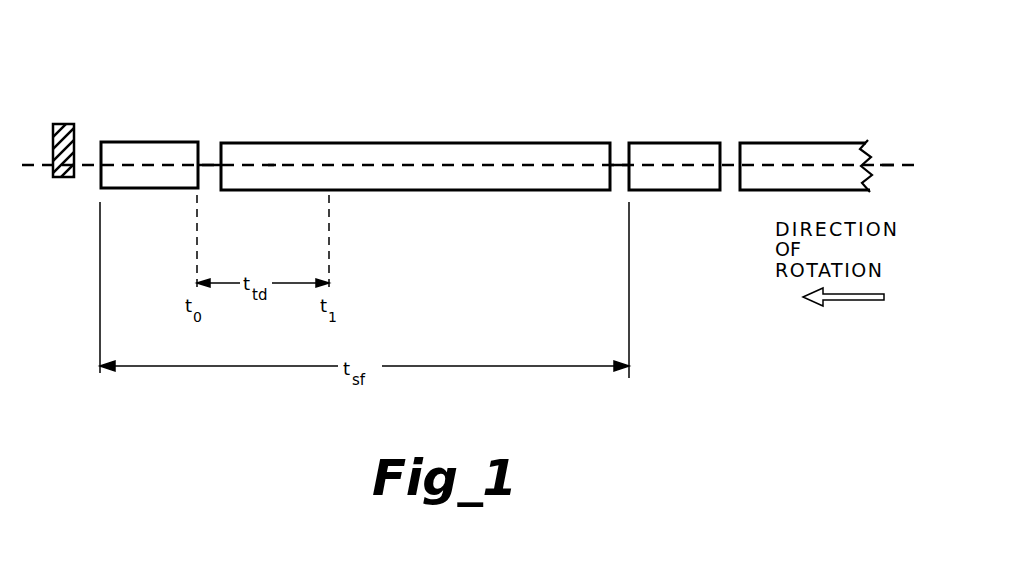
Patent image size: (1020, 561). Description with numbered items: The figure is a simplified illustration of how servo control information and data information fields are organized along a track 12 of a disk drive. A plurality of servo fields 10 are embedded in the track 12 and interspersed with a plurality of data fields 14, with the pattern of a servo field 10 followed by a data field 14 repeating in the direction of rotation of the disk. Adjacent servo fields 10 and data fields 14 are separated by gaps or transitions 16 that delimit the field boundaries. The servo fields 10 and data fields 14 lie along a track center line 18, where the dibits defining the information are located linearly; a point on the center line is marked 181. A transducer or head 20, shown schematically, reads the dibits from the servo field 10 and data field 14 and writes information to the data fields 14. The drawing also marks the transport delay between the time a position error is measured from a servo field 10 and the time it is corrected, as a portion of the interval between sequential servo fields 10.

The servo field 10 is at (152, 141).
The track 12 is at (492, 84).
The data field 14 is at (343, 143).
The gap or transition 16 is at (211, 138).
The track center line 18 is at (897, 169).
The point on segment 181 is at (270, 168).
The transducer or head 20 is at (70, 123).